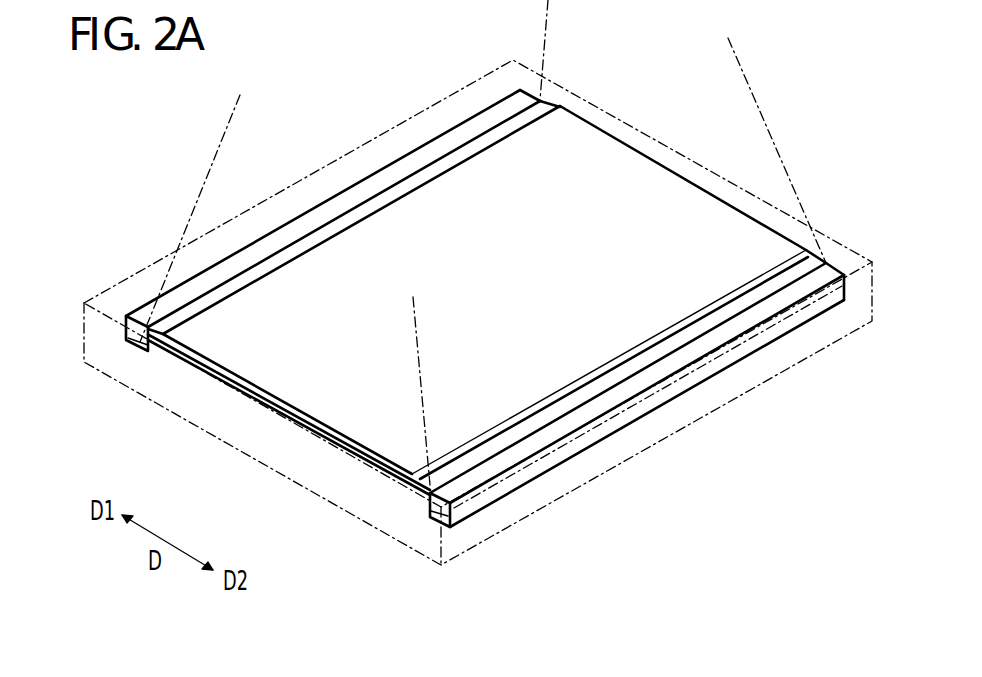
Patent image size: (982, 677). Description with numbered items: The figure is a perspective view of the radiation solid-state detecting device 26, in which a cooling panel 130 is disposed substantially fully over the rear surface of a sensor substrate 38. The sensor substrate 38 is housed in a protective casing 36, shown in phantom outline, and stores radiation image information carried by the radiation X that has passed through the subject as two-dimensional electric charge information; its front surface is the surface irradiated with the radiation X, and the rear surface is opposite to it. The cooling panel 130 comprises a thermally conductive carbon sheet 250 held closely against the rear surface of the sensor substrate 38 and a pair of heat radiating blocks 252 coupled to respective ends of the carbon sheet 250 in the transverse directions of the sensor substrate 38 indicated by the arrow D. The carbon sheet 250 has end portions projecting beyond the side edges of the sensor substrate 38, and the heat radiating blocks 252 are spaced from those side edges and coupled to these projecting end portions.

The radiation solid-state detecting device 26 is at (485, 293).
The protective casing 36 is at (337, 505).
The sensor substrate 38 is at (374, 280).
The cooling panel 130 is at (284, 414).
The carbon sheet 250 is at (345, 450).
The heat radiating blocks 252 is at (430, 157).
The radiation X is at (213, 151).